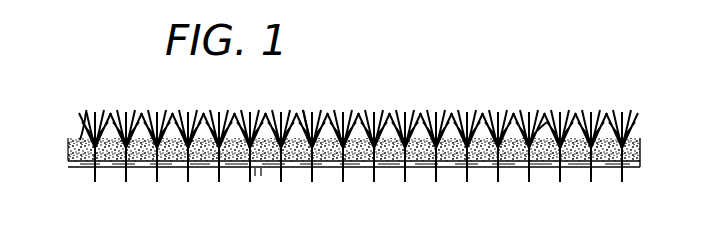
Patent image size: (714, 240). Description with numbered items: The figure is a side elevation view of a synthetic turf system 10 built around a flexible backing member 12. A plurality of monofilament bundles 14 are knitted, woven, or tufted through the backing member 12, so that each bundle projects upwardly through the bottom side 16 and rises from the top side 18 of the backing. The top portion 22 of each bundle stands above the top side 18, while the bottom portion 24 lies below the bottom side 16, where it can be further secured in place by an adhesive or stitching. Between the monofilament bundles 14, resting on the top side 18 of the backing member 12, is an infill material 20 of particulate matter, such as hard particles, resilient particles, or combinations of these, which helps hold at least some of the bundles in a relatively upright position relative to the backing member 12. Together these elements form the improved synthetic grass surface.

The synthetic turf system 10 is at (359, 145).
The flexible backing member 12 is at (72, 156).
The monofilament bundles 14 is at (98, 107).
The bottom side 16 is at (108, 179).
The top side 18 is at (77, 144).
The infill material 20 is at (650, 147).
The top portion 22 is at (313, 113).
The bottom portion 24 is at (260, 170).